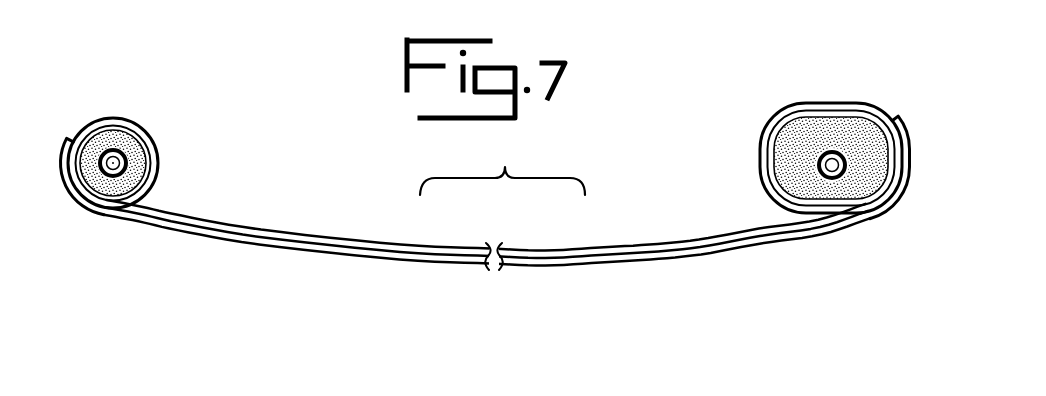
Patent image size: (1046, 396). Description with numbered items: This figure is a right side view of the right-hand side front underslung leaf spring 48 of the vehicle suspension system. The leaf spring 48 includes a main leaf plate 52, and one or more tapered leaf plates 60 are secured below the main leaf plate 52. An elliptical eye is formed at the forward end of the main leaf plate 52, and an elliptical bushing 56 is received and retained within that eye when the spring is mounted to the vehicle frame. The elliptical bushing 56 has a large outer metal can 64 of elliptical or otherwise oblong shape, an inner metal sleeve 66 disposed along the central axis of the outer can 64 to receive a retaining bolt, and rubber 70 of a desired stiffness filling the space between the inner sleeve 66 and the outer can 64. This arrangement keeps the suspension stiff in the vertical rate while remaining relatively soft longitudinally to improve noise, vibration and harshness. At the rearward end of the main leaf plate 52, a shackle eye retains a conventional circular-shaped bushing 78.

The front underslung leaf spring 48 is at (487, 259).
The main leaf plate 52 is at (651, 248).
The tapered leaf plate 60 is at (685, 259).
The circular-shaped bushing 78 is at (141, 131).
The outer metal can 64 is at (803, 111).
The elliptical bushing 56 is at (846, 99).
The rubber 70 is at (869, 128).
The inner metal sleeve 66 is at (841, 177).